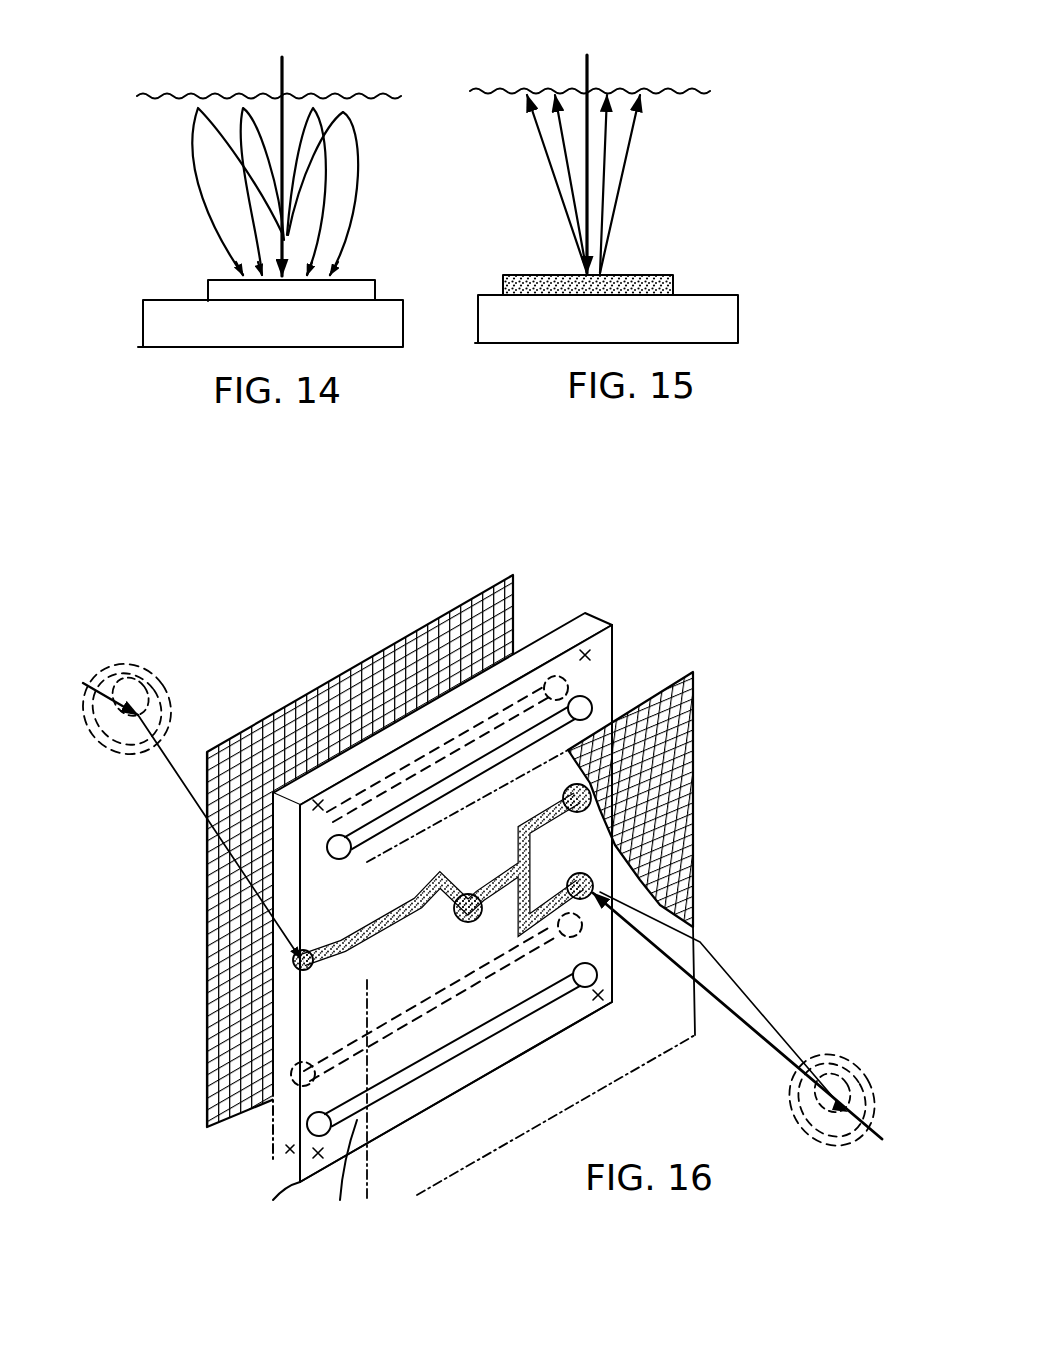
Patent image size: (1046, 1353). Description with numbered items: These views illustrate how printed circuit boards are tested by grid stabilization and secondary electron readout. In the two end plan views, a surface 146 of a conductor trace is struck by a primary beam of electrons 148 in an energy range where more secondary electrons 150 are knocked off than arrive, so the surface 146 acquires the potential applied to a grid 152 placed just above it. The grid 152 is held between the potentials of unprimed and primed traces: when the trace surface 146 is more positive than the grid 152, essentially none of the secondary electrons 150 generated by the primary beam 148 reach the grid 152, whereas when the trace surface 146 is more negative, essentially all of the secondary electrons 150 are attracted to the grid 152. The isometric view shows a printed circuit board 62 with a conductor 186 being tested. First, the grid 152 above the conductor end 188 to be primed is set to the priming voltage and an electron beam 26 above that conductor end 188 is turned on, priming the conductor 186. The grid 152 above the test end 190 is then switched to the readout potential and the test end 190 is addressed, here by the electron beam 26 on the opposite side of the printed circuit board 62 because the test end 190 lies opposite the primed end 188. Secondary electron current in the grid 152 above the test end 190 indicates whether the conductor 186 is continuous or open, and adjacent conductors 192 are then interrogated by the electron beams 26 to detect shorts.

In FIG. 14, the surface 146 is at (208, 290).
In FIG. 15, the surface 146 is at (673, 277).
In FIG. 14, the electrons 148 is at (285, 65).
In FIG. 15, the electrons 148 is at (590, 62).
In FIG. 14, the secondary electrons 150 is at (363, 168).
In FIG. 15, the secondary electrons 150 is at (627, 165).
In FIG. 14, the grid 152 is at (333, 92).
In FIG. 15, the grid 152 is at (715, 86).
In FIG. 16, the grid 152 is at (695, 697).
In FIG. 16, the printed circuit board 62 is at (600, 648).
In FIG. 16, the conductor 186 is at (380, 857).
In FIG. 16, the conductor end 188 is at (297, 968).
In FIG. 16, the test end 190 is at (586, 879).
In FIG. 16, the adjacent conductors 192 is at (553, 722).
In FIG. 16, the electron beam 26 is at (735, 1008).